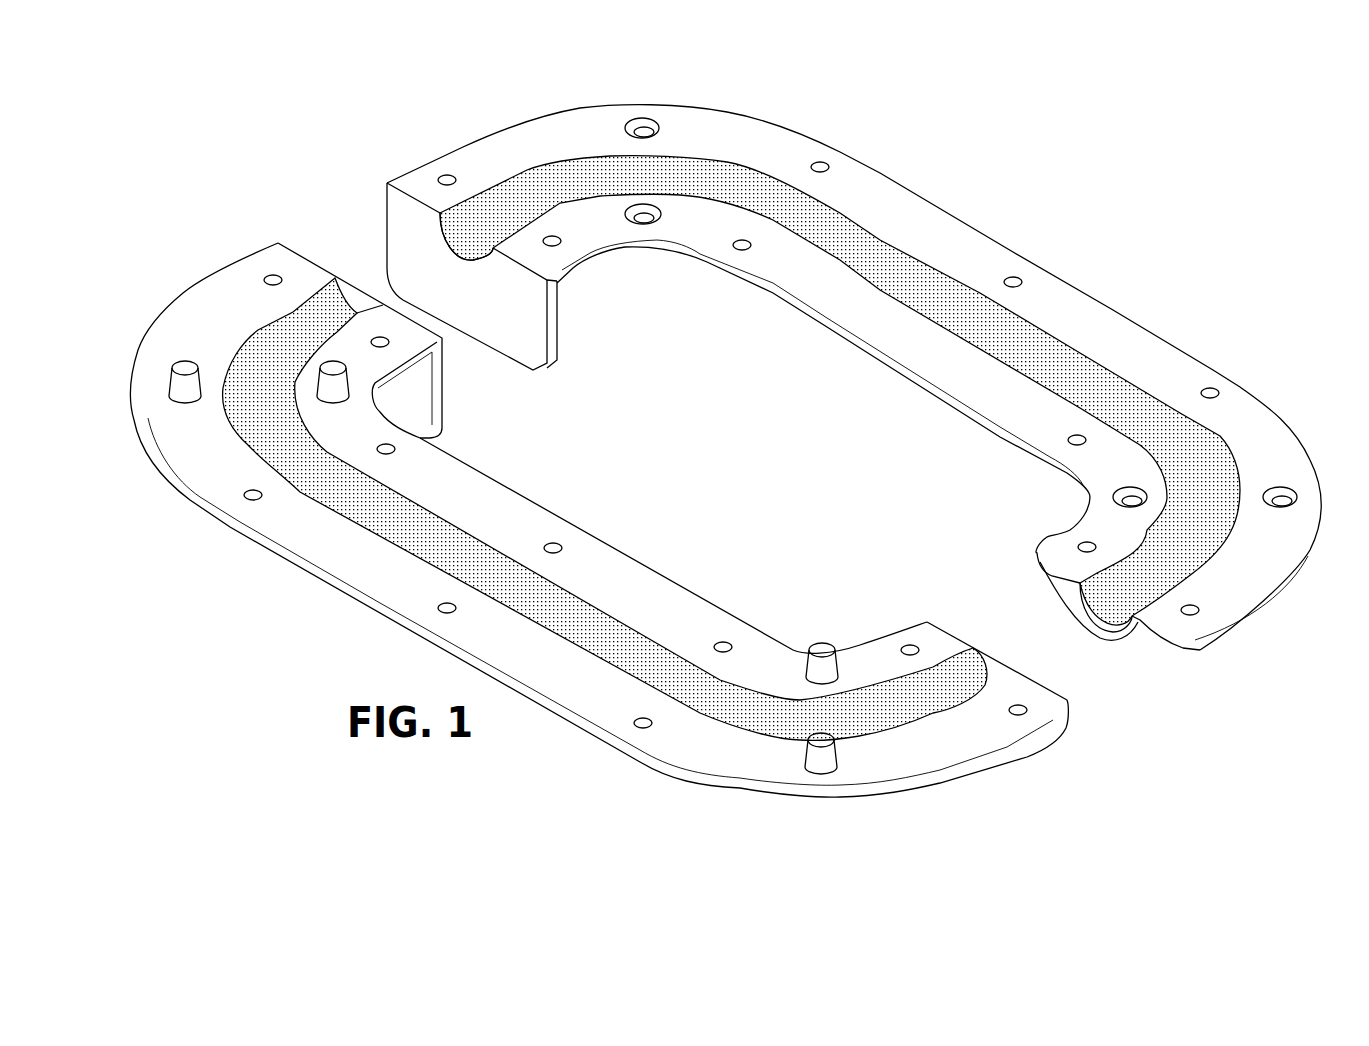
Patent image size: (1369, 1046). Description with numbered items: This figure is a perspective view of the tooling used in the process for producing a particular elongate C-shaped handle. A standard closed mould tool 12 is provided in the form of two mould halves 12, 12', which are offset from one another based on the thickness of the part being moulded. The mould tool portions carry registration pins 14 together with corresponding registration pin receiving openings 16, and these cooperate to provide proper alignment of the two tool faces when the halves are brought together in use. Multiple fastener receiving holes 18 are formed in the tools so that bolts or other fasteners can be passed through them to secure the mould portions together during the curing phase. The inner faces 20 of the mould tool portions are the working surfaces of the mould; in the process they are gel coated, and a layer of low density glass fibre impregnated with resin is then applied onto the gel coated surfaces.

The closed mould tool 12 is at (600, 512).
The mould half 12' is at (854, 376).
The registration pins 14 is at (323, 398).
The registration pin receiving openings 16 is at (645, 215).
The fastener receiving holes 18 is at (377, 338).
The inner faces 20 is at (910, 283).